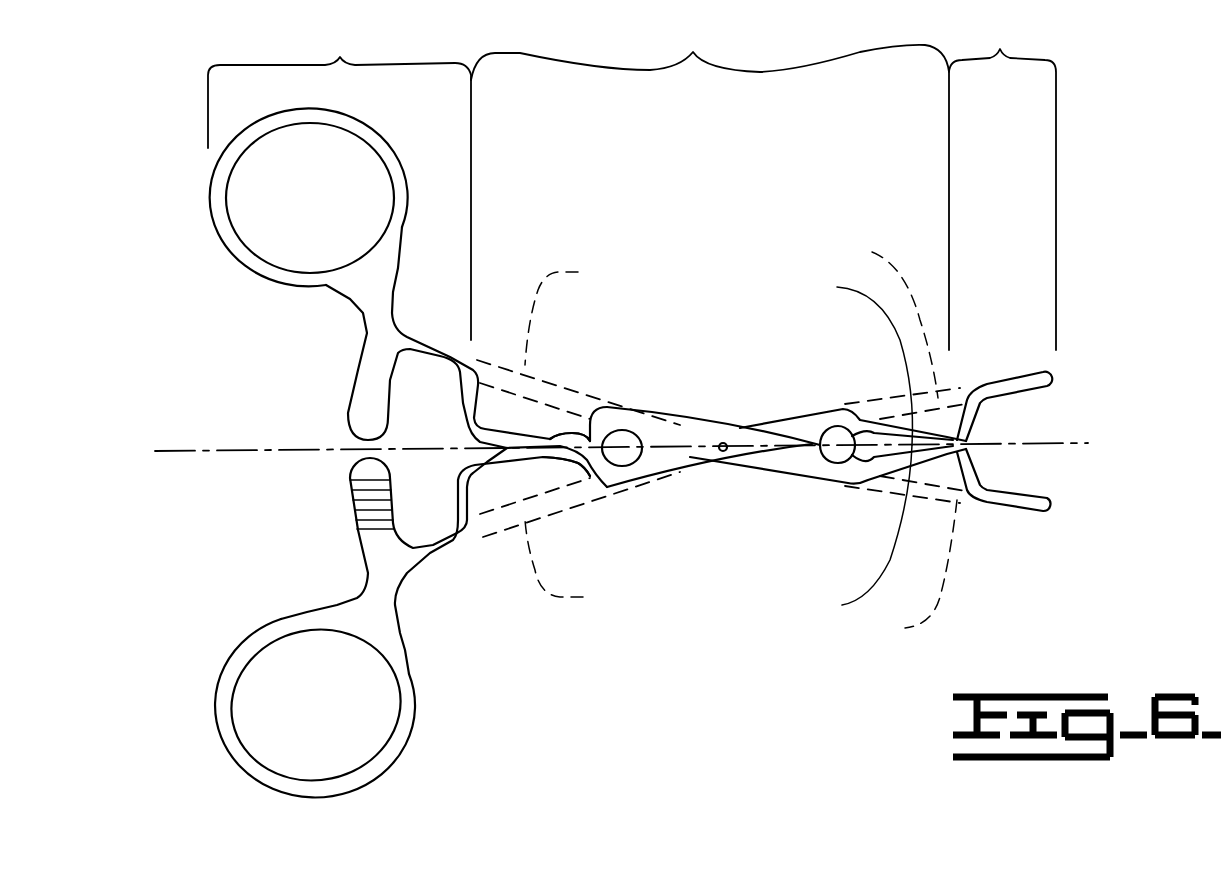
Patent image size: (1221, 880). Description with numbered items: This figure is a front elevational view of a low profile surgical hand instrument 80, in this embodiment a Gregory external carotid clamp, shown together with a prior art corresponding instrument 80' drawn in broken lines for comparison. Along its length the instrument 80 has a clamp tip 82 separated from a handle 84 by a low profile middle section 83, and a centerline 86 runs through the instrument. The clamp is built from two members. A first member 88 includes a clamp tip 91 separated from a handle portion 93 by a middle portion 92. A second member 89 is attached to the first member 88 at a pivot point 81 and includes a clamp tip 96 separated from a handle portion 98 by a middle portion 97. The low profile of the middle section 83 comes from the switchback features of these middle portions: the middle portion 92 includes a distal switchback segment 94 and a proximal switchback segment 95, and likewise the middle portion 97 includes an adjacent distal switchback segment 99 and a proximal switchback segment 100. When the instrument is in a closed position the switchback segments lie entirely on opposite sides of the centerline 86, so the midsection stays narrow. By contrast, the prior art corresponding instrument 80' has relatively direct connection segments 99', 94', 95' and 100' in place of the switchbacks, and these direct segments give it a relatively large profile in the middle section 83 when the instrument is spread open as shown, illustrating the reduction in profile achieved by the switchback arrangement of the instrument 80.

The instrument 80 is at (739, 287).
The prior art corresponding instrument 80' is at (543, 280).
The pivot point 81 is at (724, 451).
The clamp tip 82 is at (1002, 182).
The middle section 83 is at (710, 183).
The handle 84 is at (339, 179).
The centerline 86 is at (198, 450).
The first member 88 is at (800, 472).
The second member 89 is at (800, 410).
The clamp tip 91 is at (1052, 506).
The middle portion 92 is at (690, 458).
The handle portion 93 is at (275, 281).
The distal switchback segment 94 is at (859, 359).
The direct connection segment 94' is at (908, 573).
The proximal switchback segment 95 is at (591, 523).
The direct connection segment 95' is at (574, 311).
The clamp tip 96 is at (1052, 376).
The middle portion 97 is at (758, 426).
The handle portion 98 is at (281, 621).
The distal switchback segment 99 is at (859, 533).
The direct connection segment 99' is at (871, 318).
The proximal switchback segment 100 is at (602, 375).
The direct connection segment 100' is at (583, 574).